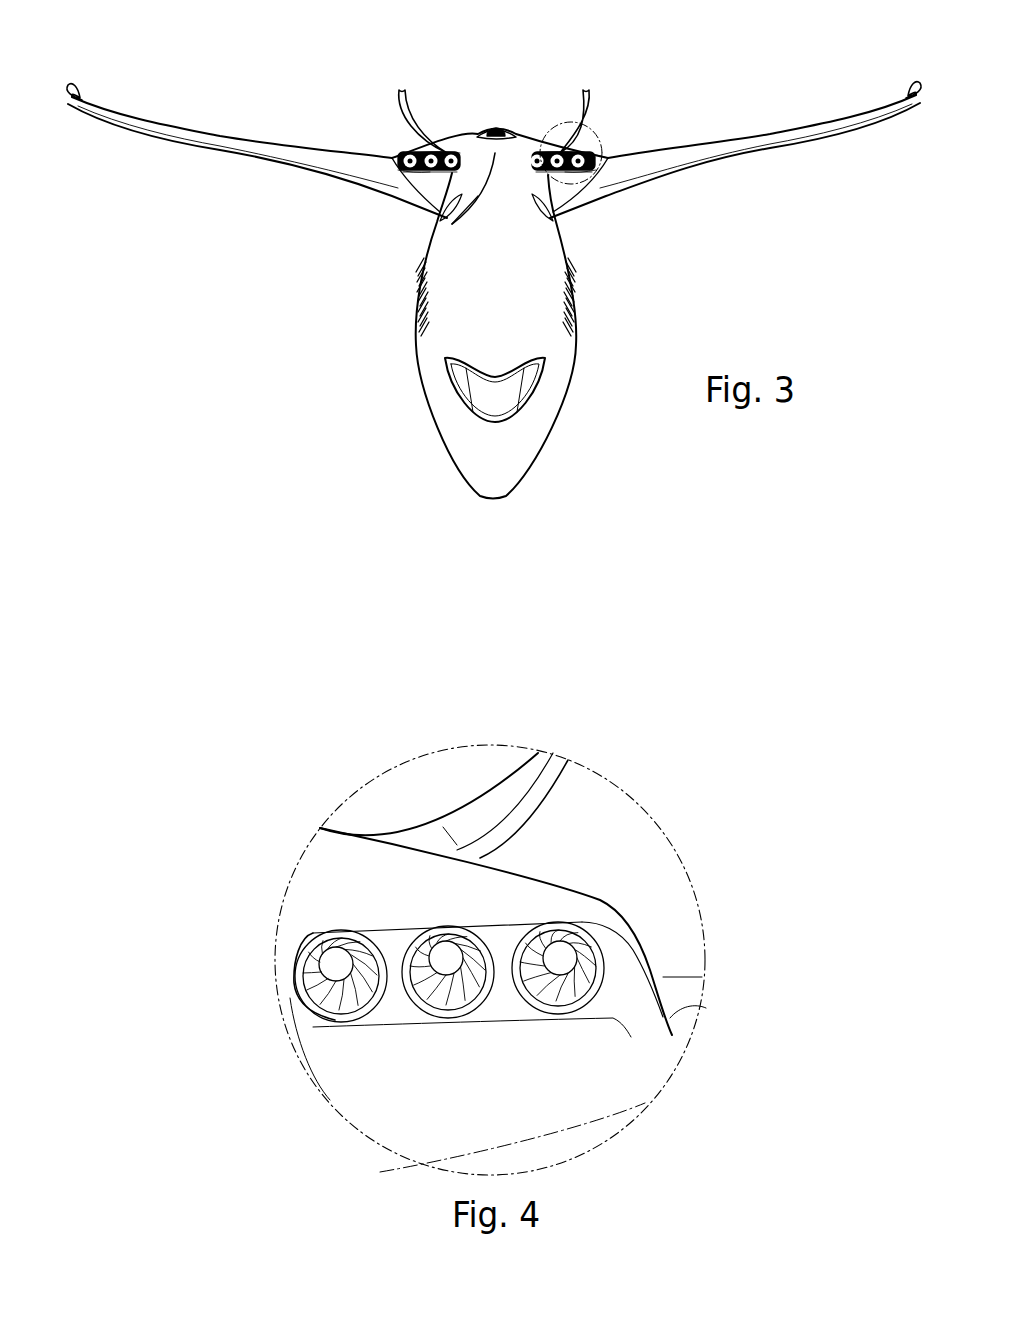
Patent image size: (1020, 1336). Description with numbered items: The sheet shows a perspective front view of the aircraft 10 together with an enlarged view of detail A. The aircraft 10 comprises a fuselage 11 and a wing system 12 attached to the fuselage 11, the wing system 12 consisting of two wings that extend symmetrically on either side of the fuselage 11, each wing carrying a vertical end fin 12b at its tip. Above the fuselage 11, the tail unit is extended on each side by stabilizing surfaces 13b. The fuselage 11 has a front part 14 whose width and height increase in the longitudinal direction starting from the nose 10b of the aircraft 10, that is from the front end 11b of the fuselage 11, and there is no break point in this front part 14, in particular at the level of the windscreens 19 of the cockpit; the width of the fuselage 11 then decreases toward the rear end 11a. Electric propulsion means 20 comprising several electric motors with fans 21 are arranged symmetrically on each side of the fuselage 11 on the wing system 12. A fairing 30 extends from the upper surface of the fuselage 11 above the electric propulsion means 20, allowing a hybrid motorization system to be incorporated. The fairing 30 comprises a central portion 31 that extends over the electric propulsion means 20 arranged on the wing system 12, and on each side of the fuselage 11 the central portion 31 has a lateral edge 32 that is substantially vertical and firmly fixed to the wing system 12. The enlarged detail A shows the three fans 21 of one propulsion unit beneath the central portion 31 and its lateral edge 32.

In FIG. 3, the aircraft 10 is at (610, 268).
In FIG. 3, the nose 10b is at (495, 508).
In FIG. 3, the fuselage 11 is at (533, 337).
In FIG. 3, the rear end of the fuselage 11a is at (494, 112).
In FIG. 3, the front end of the fuselage 11b is at (511, 487).
In FIG. 3, the wing system 12 is at (218, 140).
In FIG. 4, the wing system 12 is at (680, 1022).
In FIG. 3, the vertical end fin 12b is at (80, 88).
In FIG. 3, the stabilizing surfaces 13b is at (402, 88).
In FIG. 4, the stabilizing surfaces 13b is at (545, 758).
In FIG. 3, the front part of the fuselage 14 is at (556, 454).
In FIG. 3, the windscreens 19 is at (490, 405).
In FIG. 3, the electric propulsion means 20 is at (411, 177).
In FIG. 4, the electric propulsion means 20 is at (437, 1050).
In FIG. 4, the fans 21 is at (342, 1003).
In FIG. 3, the fairing 30 is at (452, 224).
In FIG. 3, the central portion of the fairing 31 is at (434, 138).
In FIG. 4, the central portion of the fairing 31 is at (545, 897).
In FIG. 3, the lateral edge 32 is at (398, 165).
In FIG. 4, the lateral edge 32 is at (657, 1013).
In FIG. 3, the detail A is at (553, 122).